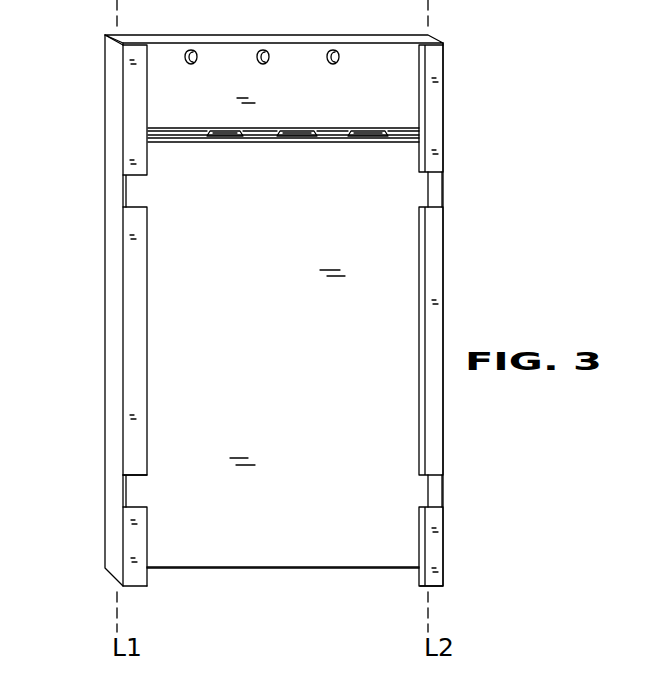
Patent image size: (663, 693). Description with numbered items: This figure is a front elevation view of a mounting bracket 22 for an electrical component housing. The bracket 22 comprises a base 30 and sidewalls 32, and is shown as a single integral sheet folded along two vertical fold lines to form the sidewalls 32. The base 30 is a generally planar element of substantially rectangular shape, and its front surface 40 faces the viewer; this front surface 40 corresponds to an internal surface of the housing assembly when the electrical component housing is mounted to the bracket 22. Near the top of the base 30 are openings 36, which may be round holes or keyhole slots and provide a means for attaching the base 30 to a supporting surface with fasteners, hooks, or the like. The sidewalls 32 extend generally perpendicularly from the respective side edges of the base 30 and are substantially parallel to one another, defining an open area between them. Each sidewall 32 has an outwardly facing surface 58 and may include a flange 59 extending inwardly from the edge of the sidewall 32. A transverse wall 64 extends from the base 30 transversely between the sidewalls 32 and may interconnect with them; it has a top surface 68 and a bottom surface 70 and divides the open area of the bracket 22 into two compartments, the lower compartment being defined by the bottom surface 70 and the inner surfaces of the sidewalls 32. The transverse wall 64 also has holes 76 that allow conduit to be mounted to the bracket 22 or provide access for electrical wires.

The bracket 22 is at (78, 128).
The base 30 is at (258, 562).
The sidewalls 32 is at (113, 278).
The openings 36 is at (352, 82).
The front surface 40 is at (316, 528).
The outwardly facing surface 58 is at (108, 413).
The flange 59 is at (135, 368).
The transverse wall 64 is at (248, 145).
The top surface 68 is at (190, 105).
The bottom surface 70 is at (331, 143).
The holes 76 is at (300, 143).